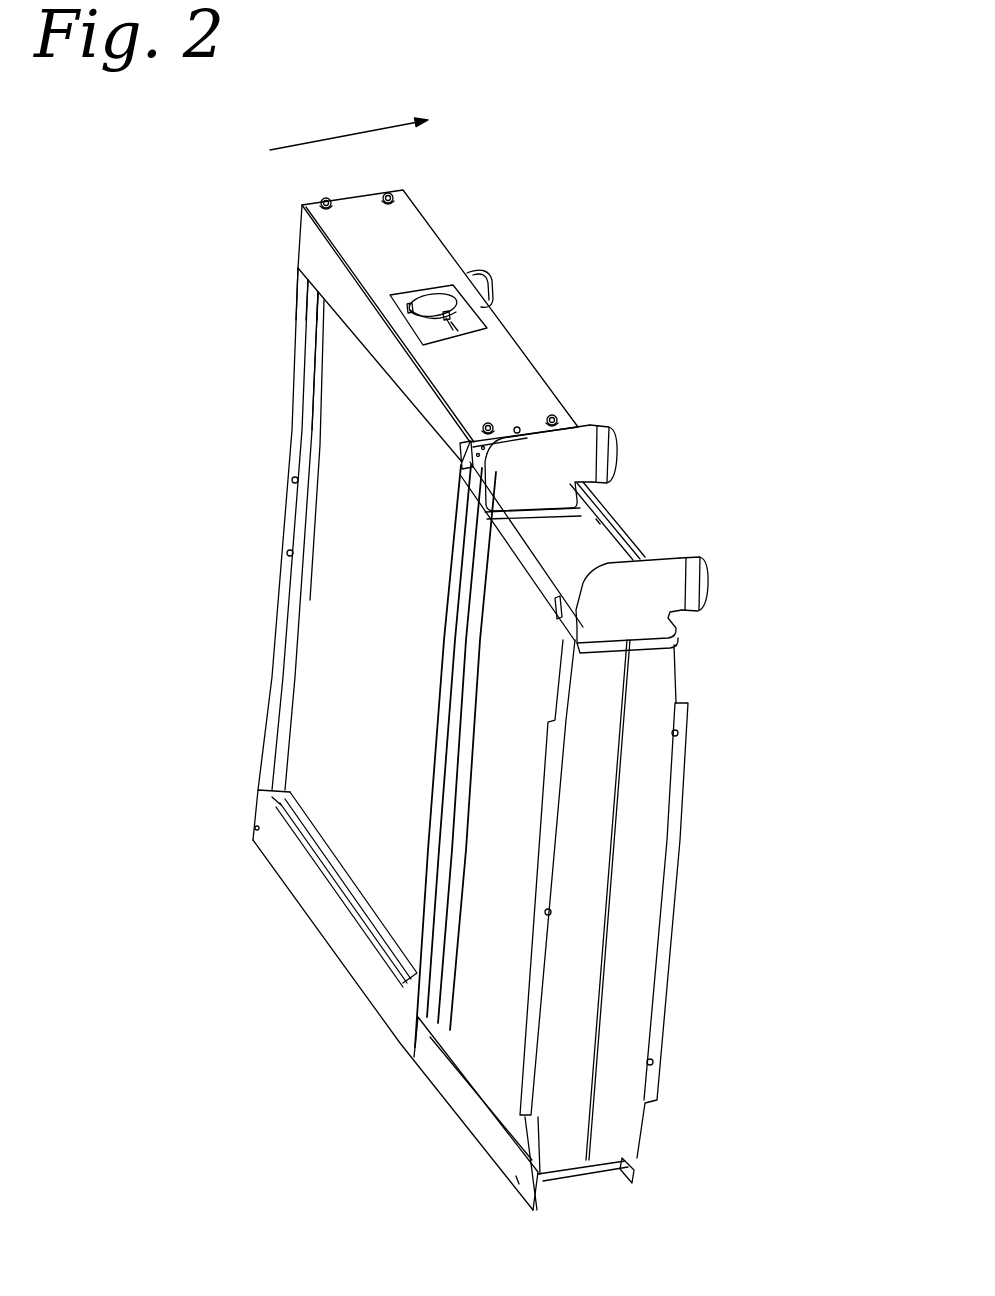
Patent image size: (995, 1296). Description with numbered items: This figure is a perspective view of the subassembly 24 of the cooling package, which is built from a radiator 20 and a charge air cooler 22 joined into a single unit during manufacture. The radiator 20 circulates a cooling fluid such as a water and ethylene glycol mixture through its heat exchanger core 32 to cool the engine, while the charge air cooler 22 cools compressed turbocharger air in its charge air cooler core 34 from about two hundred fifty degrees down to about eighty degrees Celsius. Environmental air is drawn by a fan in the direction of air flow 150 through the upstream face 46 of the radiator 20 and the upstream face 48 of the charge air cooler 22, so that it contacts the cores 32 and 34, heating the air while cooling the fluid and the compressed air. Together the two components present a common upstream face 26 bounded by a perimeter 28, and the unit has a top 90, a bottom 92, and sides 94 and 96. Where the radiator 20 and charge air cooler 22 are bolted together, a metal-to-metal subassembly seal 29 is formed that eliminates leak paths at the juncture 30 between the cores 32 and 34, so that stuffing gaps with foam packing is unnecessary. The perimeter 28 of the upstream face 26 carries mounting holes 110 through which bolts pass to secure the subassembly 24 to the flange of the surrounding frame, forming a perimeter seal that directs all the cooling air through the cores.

The radiator 20 is at (486, 200).
The charge air cooler 22 is at (676, 492).
The subassembly 24 is at (628, 230).
The upstream face 26 is at (399, 766).
The perimeter 28 is at (312, 910).
The subassembly seal 29 is at (416, 880).
The juncture 30 is at (564, 420).
The heat exchanger core 32 is at (340, 401).
The charge air cooler core 34 is at (507, 1080).
The upstream face of radiator 46 is at (315, 527).
The upstream face of charge air cooler 48 is at (483, 1028).
The top 90 is at (534, 374).
The bottom 92 is at (272, 897).
The side 94 is at (295, 318).
The side 96 is at (640, 780).
The mounting holes 110 is at (455, 471).
The direction of air flow 150 is at (331, 139).